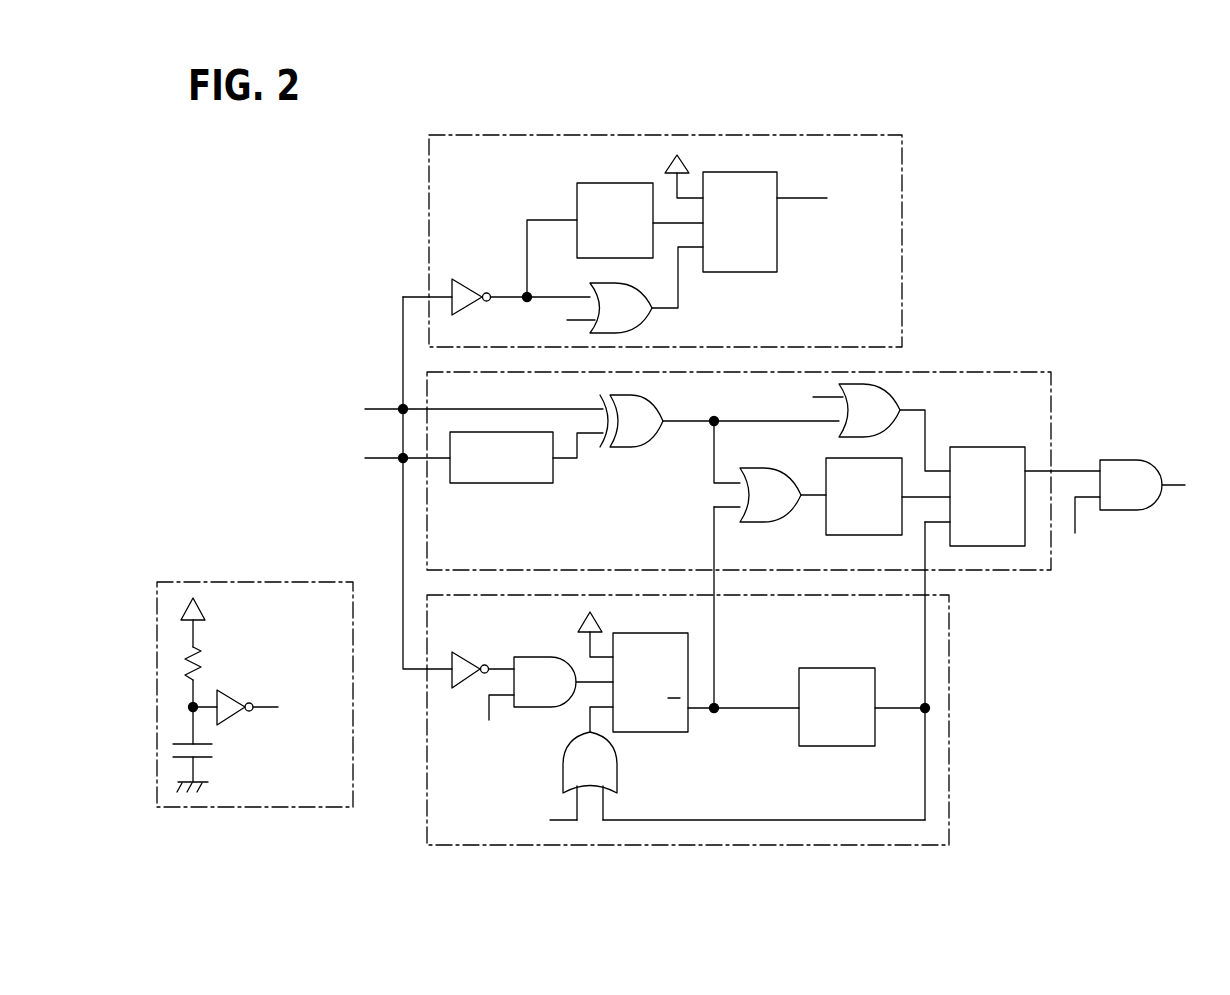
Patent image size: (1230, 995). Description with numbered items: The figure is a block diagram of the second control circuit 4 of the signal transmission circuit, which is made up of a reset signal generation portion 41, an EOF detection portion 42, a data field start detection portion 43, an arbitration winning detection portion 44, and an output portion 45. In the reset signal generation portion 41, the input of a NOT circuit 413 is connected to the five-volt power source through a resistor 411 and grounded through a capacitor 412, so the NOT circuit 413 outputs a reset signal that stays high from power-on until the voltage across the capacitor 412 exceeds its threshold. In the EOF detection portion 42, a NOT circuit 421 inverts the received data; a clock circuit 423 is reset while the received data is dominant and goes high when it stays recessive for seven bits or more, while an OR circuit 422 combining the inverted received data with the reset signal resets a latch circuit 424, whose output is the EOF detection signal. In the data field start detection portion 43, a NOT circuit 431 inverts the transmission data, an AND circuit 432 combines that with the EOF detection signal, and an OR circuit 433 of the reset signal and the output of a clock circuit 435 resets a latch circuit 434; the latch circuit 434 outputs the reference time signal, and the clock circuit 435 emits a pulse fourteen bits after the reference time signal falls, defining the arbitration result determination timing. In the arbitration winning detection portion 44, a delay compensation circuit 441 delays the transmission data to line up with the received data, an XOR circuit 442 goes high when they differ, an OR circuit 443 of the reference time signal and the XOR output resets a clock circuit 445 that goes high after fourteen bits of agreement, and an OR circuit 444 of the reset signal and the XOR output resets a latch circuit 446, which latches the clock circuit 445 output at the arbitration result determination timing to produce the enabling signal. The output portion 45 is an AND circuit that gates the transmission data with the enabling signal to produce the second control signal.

The second control circuit 4 is at (248, 196).
The reset signal generation portion 41 is at (303, 582).
The resistor 411 is at (206, 650).
The capacitor 412 is at (212, 757).
The inverting circuit (NOT circuit) 413 is at (237, 700).
The EOF detection portion 42 is at (903, 160).
The NOT circuit 421 is at (474, 279).
The OR circuit 422 is at (649, 316).
The clock circuit 423 is at (608, 183).
The latch circuit 424 is at (750, 272).
The data field start detection portion 43 is at (950, 622).
The NOT circuit 431 is at (473, 660).
The AND circuit 432 is at (545, 657).
The OR circuit 433 is at (563, 772).
The latch circuit 434 is at (660, 732).
The clock circuit 435 is at (822, 746).
The arbitration winning detection portion 44 is at (1002, 372).
The delay compensation circuit 441 is at (527, 483).
The exclusive OR circuit (XOR circuit) 442 is at (628, 447).
The OR circuit 443 is at (765, 522).
The OR circuit 444 is at (897, 390).
The clock circuit 445 is at (838, 458).
The latch circuit 446 is at (1000, 447).
The output portion 45 is at (1124, 460).